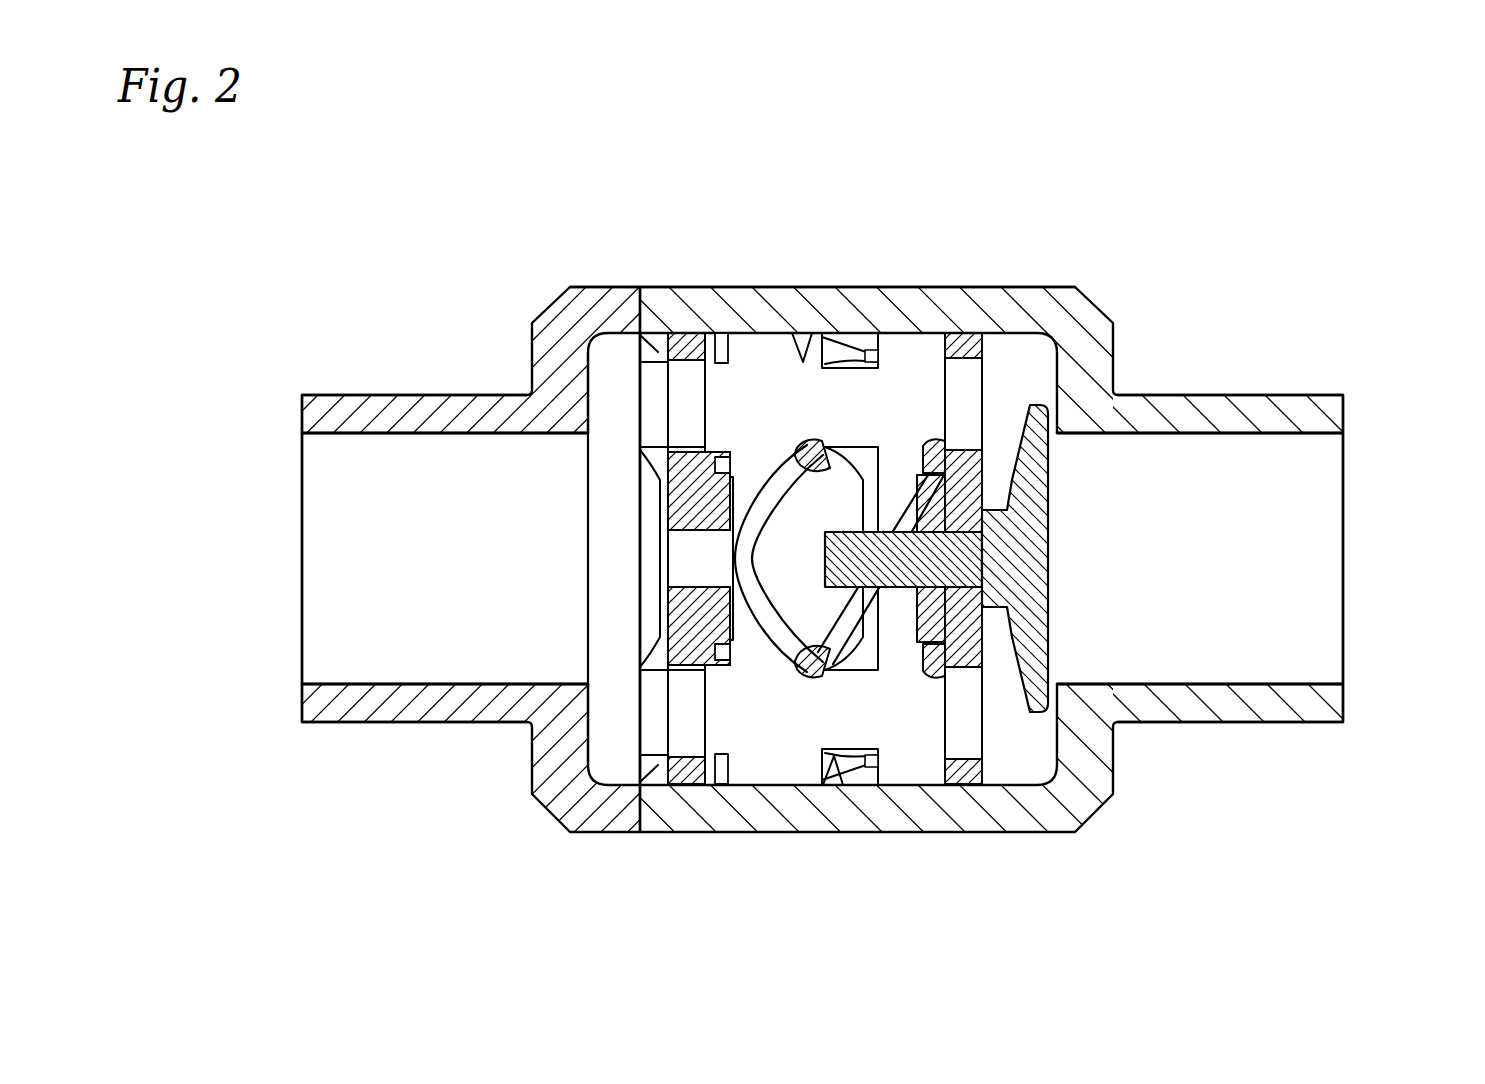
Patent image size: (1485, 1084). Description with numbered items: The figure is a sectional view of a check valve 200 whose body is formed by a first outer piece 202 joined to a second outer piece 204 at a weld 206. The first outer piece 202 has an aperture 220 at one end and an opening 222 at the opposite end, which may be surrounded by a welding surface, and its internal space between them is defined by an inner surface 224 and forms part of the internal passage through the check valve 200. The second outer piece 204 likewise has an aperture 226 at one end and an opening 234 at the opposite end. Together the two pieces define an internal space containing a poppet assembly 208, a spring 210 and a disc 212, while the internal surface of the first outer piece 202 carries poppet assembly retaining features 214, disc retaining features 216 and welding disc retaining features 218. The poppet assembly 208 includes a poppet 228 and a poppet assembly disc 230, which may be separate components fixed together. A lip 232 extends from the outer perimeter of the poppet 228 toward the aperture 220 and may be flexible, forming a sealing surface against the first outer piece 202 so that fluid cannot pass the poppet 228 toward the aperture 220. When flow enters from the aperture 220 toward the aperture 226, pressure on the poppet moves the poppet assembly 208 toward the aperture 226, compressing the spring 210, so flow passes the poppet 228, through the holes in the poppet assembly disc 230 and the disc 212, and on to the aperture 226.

The check valve 200 is at (500, 178).
The first outer piece 202 is at (936, 287).
The second outer piece 204 is at (412, 394).
The weld 206 is at (635, 807).
The poppet assembly 208 is at (1000, 413).
The spring 210 is at (782, 490).
The disc 212 is at (688, 770).
The poppet assembly retaining features 214 is at (880, 632).
The disc retaining features 216 is at (640, 753).
The welding disc retaining features 218 is at (768, 767).
The aperture 220 is at (1315, 480).
The opening 222 is at (652, 397).
The inner surface 224 is at (808, 350).
The aperture 226 is at (325, 505).
The poppet 228 is at (1013, 712).
The poppet assembly disc 230 is at (982, 735).
The lip 232 is at (1063, 427).
The opening 234 is at (610, 485).